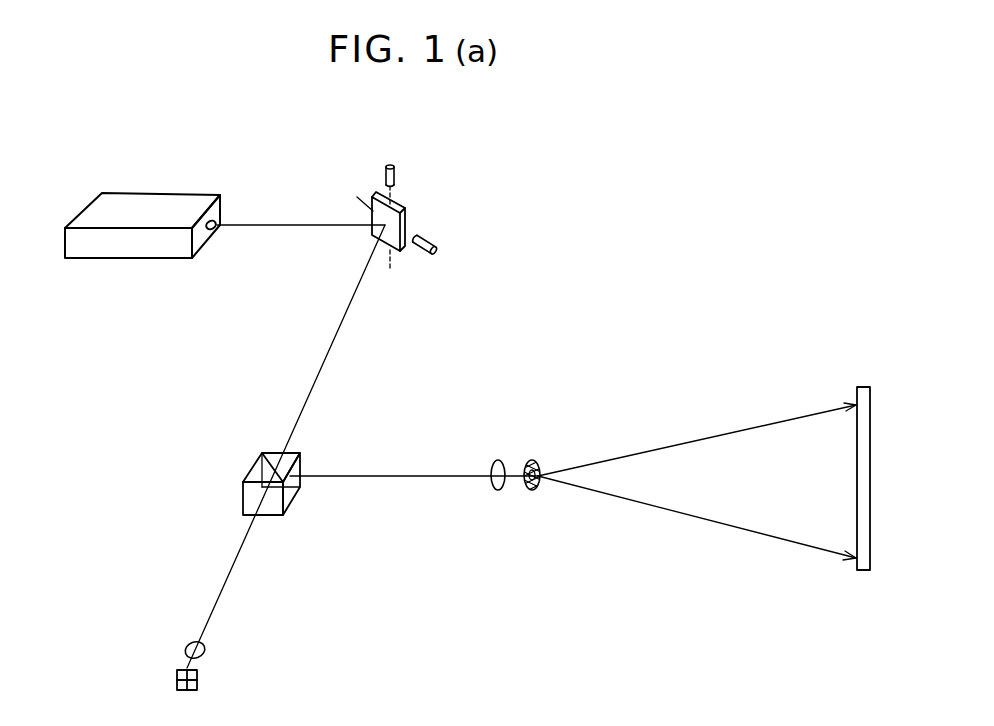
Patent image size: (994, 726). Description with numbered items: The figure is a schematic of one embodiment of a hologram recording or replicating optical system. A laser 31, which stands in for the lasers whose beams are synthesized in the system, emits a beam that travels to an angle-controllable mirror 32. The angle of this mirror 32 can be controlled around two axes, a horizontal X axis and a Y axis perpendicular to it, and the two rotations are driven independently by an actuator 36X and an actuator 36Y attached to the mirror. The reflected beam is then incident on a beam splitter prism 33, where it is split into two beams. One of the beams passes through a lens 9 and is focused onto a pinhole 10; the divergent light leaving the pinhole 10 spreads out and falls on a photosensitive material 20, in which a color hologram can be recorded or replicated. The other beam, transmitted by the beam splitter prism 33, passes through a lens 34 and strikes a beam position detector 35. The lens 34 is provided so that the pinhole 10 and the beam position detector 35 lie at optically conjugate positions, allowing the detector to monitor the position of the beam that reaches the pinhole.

The laser 31 is at (152, 207).
The angle-controllable mirror 32 is at (402, 208).
The actuator 36Y is at (395, 163).
The actuator 36X is at (438, 249).
The beam splitter prism 33 is at (292, 497).
The lens 9 is at (498, 490).
The pinhole 10 is at (537, 490).
The photosensitive material 20 is at (862, 570).
The lens 34 is at (205, 648).
The beam position detector 35 is at (197, 685).